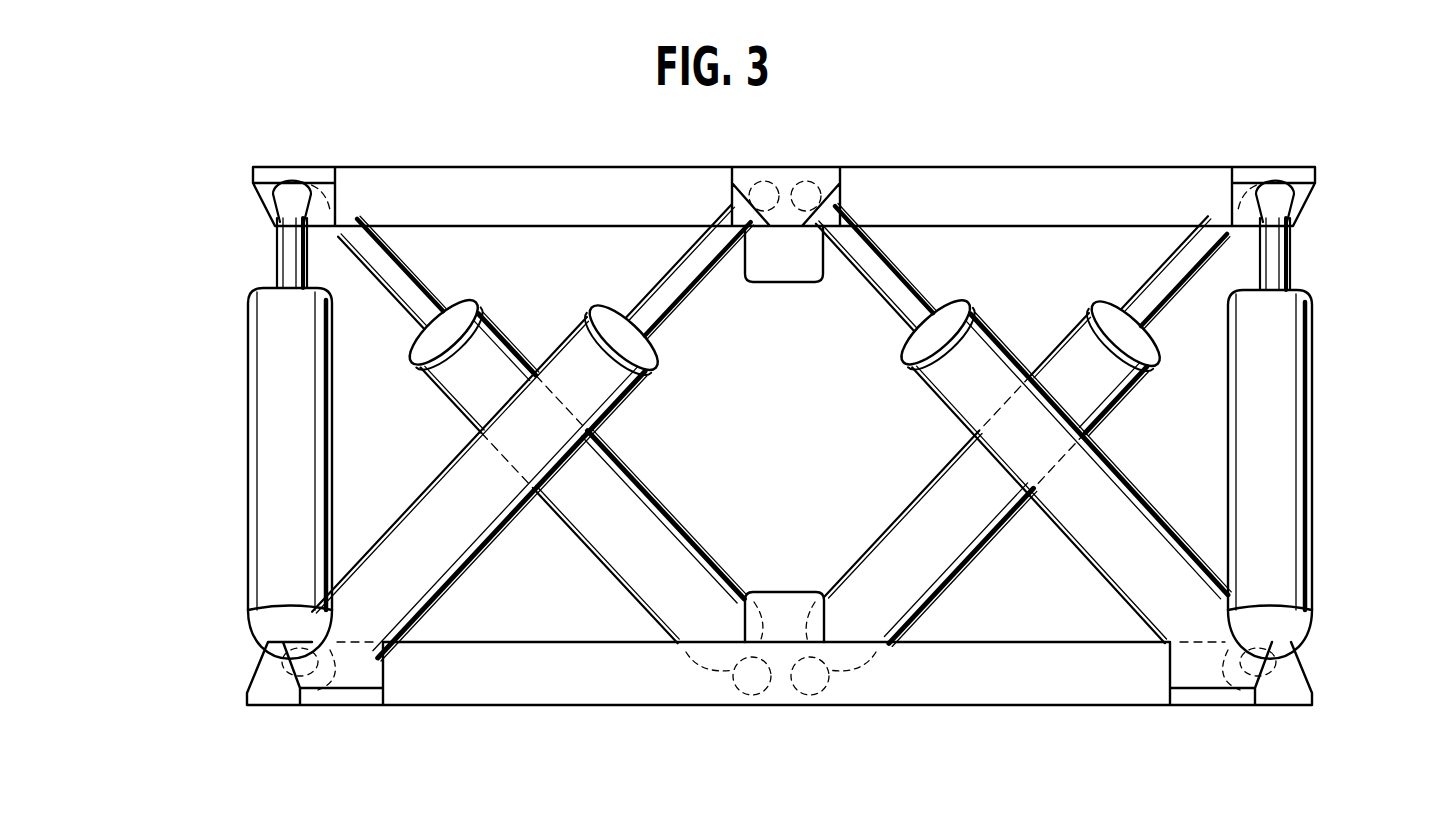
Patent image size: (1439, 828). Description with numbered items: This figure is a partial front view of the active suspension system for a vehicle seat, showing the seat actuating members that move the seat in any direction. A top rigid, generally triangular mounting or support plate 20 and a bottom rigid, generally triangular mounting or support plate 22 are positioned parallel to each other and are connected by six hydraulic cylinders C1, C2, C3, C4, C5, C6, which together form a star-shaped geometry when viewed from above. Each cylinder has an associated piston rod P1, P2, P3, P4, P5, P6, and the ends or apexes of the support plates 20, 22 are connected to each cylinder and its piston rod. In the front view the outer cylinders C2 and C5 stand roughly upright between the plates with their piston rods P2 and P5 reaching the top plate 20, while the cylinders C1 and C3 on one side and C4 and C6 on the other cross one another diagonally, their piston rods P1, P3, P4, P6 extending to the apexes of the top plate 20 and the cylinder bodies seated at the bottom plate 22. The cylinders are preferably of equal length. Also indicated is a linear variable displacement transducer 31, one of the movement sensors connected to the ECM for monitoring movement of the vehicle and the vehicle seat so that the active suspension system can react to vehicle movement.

The top support plate 20 is at (560, 216).
The bottom support plate 22 is at (518, 682).
The linear variable displacement transducer 31 is at (765, 592).
The hydraulic cylinder C1 is at (390, 552).
The hydraulic cylinder C2 is at (262, 390).
The hydraulic cylinder C3 is at (652, 607).
The hydraulic cylinder C4 is at (960, 577).
The hydraulic cylinder C5 is at (1300, 390).
The hydraulic cylinder C6 is at (1150, 523).
The piston rod P1 is at (667, 228).
The piston rod P2 is at (285, 262).
The piston rod P3 is at (402, 228).
The piston rod P4 is at (1158, 262).
The piston rod P5 is at (1277, 258).
The piston rod P6 is at (905, 262).